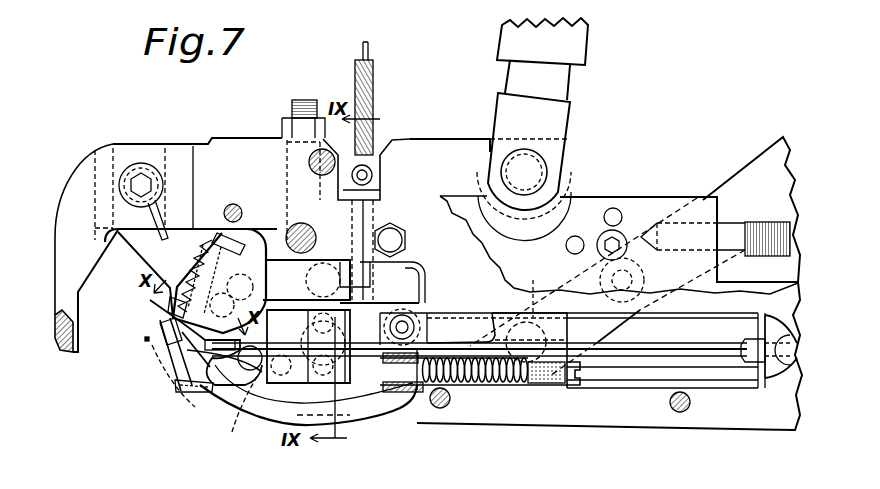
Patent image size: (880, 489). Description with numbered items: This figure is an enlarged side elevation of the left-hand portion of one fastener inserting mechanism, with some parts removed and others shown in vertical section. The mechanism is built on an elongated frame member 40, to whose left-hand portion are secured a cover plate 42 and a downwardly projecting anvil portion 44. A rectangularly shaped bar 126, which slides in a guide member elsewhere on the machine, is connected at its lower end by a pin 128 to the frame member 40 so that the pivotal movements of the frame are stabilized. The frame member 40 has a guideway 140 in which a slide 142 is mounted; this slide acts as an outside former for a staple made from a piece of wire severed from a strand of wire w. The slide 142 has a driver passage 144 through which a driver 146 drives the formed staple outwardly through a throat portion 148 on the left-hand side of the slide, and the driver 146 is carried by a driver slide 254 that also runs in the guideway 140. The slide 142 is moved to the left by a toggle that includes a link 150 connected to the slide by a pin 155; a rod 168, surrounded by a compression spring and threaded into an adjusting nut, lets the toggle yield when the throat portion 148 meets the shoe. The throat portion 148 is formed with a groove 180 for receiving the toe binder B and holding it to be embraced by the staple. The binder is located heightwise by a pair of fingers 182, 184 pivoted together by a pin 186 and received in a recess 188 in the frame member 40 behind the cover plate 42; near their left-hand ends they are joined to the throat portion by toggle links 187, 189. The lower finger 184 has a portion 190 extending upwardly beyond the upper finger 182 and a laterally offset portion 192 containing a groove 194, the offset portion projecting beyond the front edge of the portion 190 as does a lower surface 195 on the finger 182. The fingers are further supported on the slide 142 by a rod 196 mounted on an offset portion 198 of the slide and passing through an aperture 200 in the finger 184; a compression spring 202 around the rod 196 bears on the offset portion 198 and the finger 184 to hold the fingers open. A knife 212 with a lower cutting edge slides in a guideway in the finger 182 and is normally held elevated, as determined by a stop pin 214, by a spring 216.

The frame member 40 is at (468, 130).
The cover plate 42 is at (548, 253).
The anvil portion 44 is at (50, 318).
The bar 126 is at (571, 82).
The pin 128 is at (548, 167).
The guideway 140 is at (598, 388).
The slide 142 is at (502, 390).
The driver passage 144 is at (493, 340).
The driver 146 is at (641, 357).
The throat portion 148 is at (187, 352).
The link 150 is at (748, 162).
The pin 155 is at (540, 289).
The rod 168 is at (770, 206).
The groove 180 is at (207, 345).
The finger 182 is at (360, 257).
The finger 184 is at (344, 408).
The pin 186 is at (408, 318).
The toggle link 187 is at (270, 260).
The recess 188 is at (409, 273).
The toggle link 189 is at (235, 413).
The portion 190 is at (200, 350).
The laterally offset portion 192 is at (205, 392).
The groove 194 is at (190, 392).
The lower surface 195 is at (190, 337).
The rod 196 is at (460, 390).
The offset portion 198 is at (550, 388).
The aperture 200 is at (404, 412).
The compression spring 202 is at (481, 388).
The knife 212 is at (248, 230).
The stop pin 214 is at (250, 345).
The spring 216 is at (203, 240).
The driver slide 254 is at (768, 385).
The toe binder B is at (145, 339).
The strand of wire w is at (370, 47).